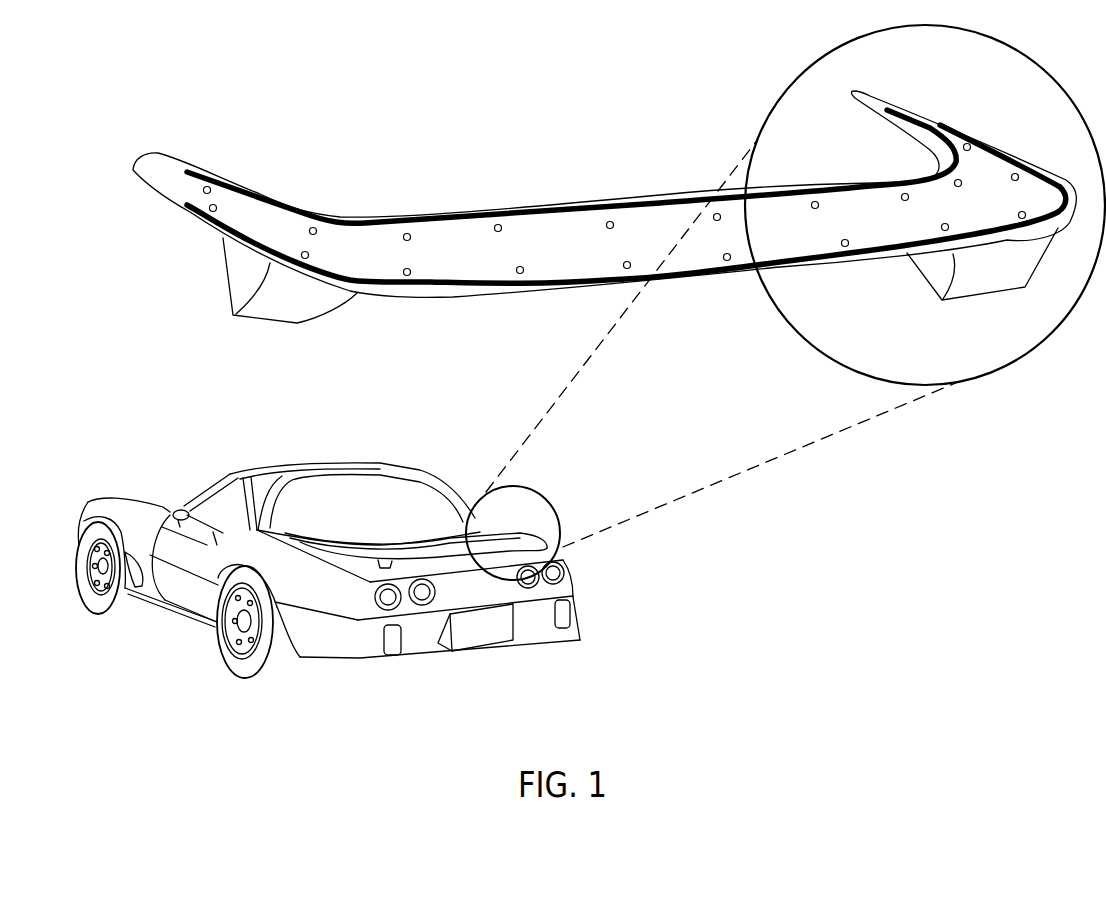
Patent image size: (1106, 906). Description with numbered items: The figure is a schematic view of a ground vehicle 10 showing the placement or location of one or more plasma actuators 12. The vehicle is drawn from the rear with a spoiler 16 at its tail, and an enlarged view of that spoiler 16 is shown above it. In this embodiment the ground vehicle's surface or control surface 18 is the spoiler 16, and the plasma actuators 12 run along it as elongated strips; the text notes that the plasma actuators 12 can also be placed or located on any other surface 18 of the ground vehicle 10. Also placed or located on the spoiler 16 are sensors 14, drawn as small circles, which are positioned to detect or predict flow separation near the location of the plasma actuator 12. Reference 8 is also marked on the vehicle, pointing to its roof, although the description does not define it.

The roof 8 is at (258, 470).
The ground vehicle 10 is at (162, 510).
The plasma actuator 12 is at (607, 273).
The sensor 14 is at (945, 227).
The spoiler 16 is at (368, 253).
The control surface 18 is at (188, 587).